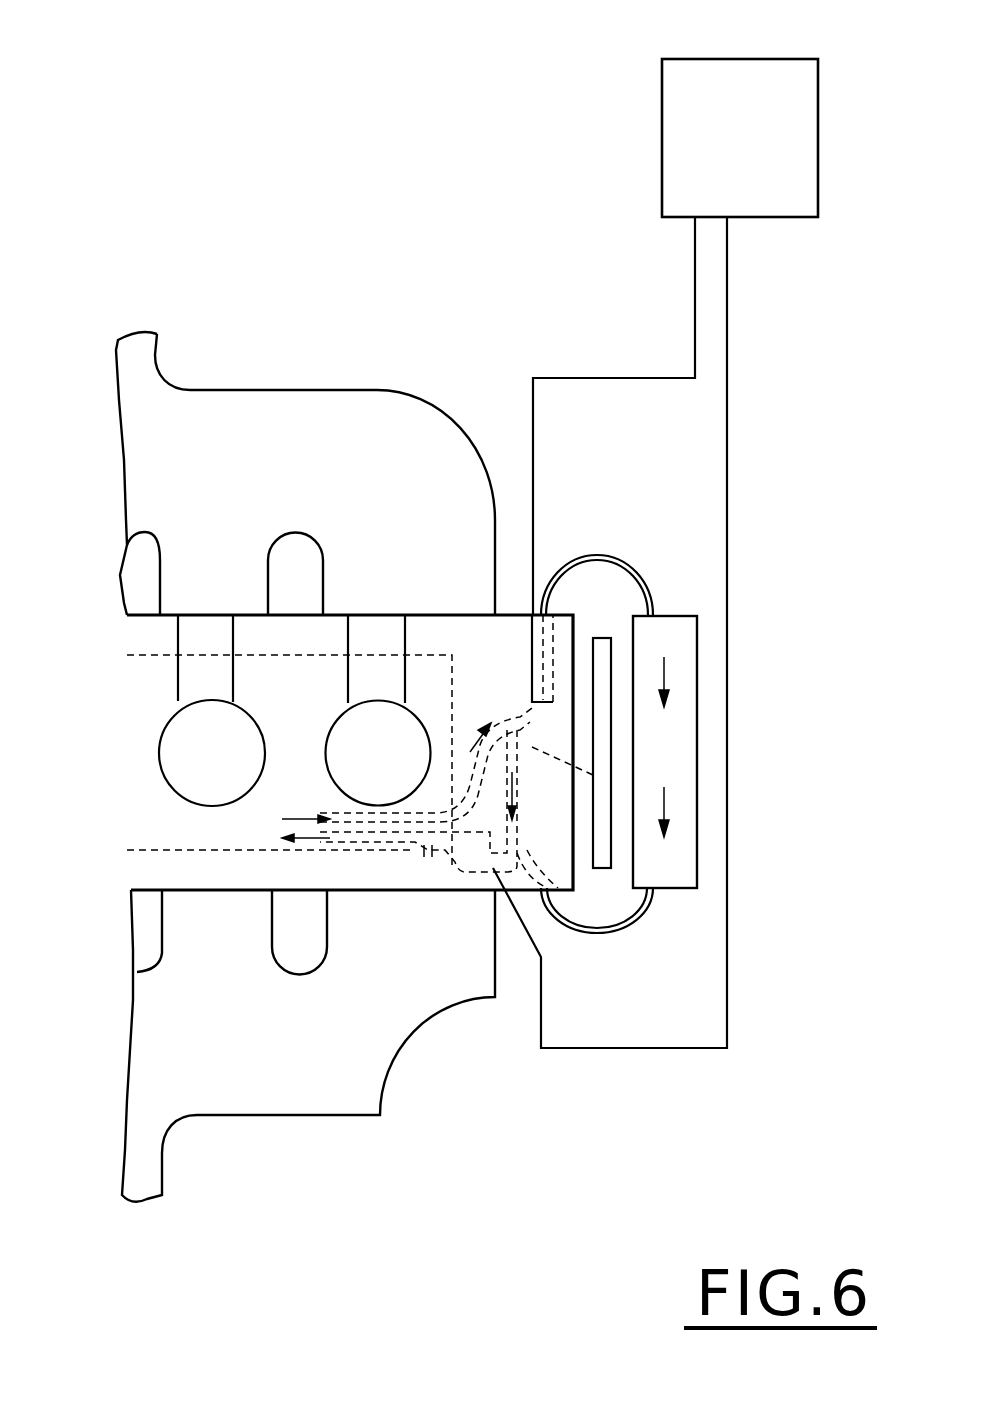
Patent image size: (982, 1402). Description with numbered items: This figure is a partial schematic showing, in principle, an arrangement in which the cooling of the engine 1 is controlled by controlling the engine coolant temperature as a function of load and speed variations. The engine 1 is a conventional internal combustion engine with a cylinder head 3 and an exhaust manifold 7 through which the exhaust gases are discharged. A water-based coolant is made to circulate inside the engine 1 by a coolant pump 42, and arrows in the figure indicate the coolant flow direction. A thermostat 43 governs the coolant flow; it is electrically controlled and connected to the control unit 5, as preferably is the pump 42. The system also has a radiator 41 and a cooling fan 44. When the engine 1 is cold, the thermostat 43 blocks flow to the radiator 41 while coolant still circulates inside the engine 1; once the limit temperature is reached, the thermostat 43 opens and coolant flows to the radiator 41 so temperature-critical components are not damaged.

The engine 1 is at (433, 601).
The cylinder head 3 is at (197, 853).
The control unit 5 is at (673, 113).
The exhaust manifold 7 is at (415, 1103).
The radiator 41 is at (687, 610).
The coolant pump 42 is at (458, 898).
The thermostat 43 is at (593, 775).
The cooling fan 44 is at (607, 650).